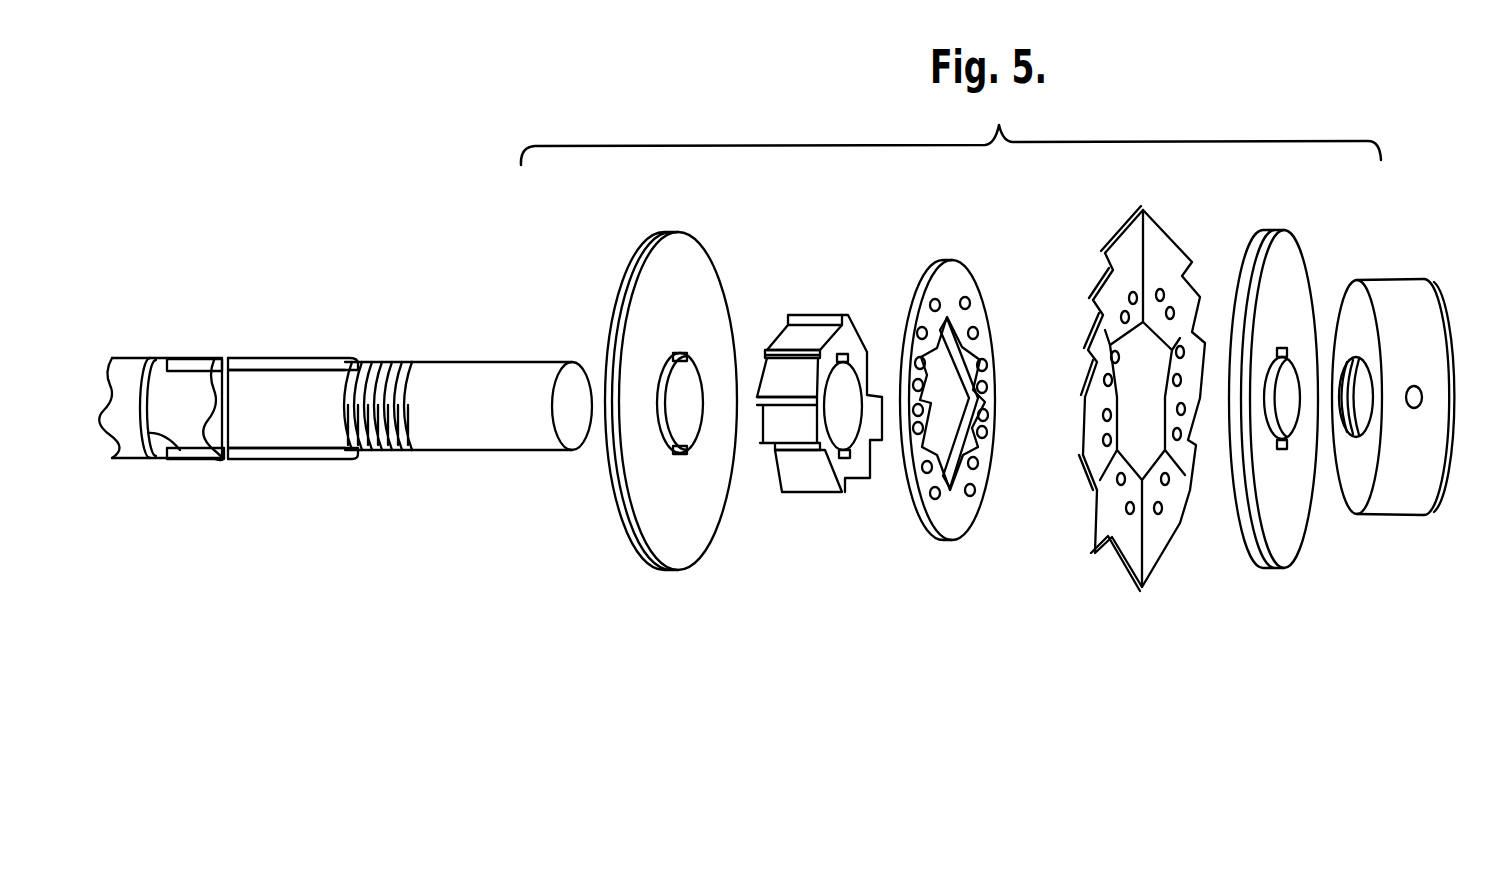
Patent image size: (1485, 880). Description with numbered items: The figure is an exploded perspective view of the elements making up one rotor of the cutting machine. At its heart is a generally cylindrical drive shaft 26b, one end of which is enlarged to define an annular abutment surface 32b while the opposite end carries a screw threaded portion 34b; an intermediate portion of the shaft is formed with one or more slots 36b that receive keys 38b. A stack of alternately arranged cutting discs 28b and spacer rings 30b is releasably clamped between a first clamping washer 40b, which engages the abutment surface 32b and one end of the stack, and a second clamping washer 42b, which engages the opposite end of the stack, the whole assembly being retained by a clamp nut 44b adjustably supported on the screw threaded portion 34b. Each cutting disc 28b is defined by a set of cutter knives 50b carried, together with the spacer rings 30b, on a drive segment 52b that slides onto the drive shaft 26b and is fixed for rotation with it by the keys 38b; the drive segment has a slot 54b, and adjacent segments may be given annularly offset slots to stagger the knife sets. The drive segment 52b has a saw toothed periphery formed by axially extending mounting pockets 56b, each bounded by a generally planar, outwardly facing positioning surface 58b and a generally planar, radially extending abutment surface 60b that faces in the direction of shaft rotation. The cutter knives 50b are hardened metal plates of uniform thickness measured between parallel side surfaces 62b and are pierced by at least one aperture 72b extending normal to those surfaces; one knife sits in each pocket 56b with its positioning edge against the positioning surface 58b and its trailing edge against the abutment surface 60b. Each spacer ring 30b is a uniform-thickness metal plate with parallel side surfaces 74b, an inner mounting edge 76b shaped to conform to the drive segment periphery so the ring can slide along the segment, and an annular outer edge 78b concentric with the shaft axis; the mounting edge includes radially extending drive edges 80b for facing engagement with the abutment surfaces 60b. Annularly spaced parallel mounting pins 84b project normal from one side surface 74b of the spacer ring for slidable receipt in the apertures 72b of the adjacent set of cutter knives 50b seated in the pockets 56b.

The drive shaft 26b is at (472, 360).
The cutting disc 28b is at (1132, 401).
The spacer ring 30b is at (947, 412).
The annular abutment surface 32b is at (185, 455).
The screw threaded portion 34b is at (393, 358).
The slot 36b is at (245, 365).
The key 38b is at (258, 357).
The first clamping washer 40b is at (655, 232).
The second clamping washer 42b is at (1272, 228).
The clamp nut 44b is at (1386, 280).
The cutter knife 50b is at (1115, 234).
The drive segment 52b is at (814, 412).
The slot 54b is at (876, 435).
The mounting pocket 56b is at (765, 420).
The positioning surface 58b is at (806, 335).
The abutment surface 60b is at (768, 362).
The side surface 62b is at (1162, 252).
The aperture 72b is at (1173, 312).
The side surface 74b is at (950, 268).
The inner mounting edge 76b is at (994, 411).
The annular outer edge 78b is at (940, 262).
The drive edge 80b is at (978, 412).
The mounting pin 84b is at (977, 330).